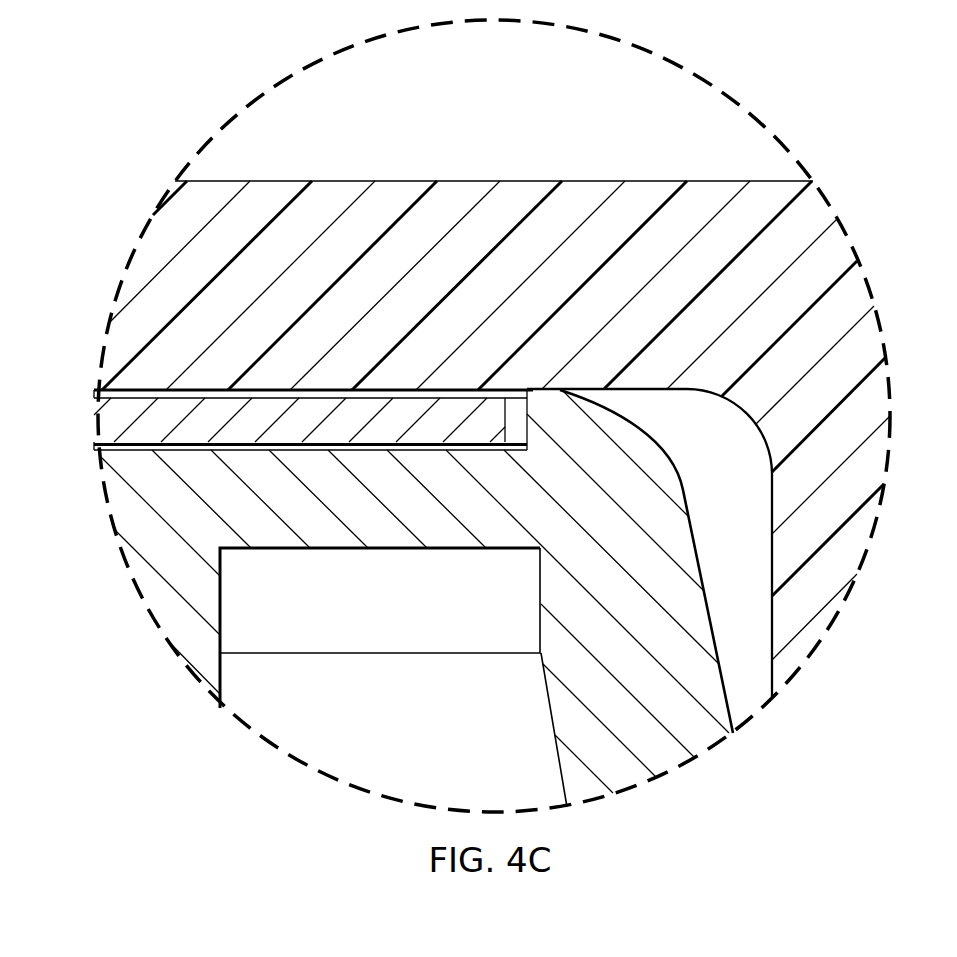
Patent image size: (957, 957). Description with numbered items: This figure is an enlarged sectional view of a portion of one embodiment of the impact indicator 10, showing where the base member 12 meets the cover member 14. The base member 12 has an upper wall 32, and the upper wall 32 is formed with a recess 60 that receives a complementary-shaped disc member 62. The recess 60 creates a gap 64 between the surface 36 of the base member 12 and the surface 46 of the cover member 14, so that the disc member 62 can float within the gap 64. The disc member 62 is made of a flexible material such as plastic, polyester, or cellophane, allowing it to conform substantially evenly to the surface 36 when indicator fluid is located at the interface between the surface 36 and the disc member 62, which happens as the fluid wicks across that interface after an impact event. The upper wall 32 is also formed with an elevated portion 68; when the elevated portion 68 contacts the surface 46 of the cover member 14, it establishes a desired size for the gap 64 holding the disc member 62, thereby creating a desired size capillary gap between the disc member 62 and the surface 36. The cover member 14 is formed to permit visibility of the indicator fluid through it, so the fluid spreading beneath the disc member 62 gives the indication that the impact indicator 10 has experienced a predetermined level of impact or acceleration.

The impact indicator 10 is at (238, 66).
The base member 12 is at (548, 709).
The cover member 14 is at (584, 181).
The upper wall 32 is at (651, 490).
The surface 36 is at (112, 447).
The surface 46 is at (690, 391).
The recess 60 is at (328, 392).
The disc member 62 is at (220, 394).
The gap 64 is at (517, 410).
The elevated portion 68 is at (524, 437).